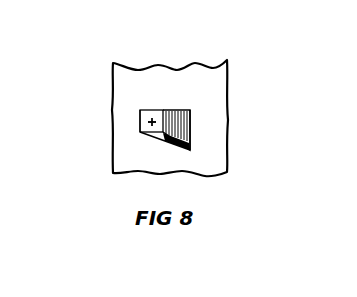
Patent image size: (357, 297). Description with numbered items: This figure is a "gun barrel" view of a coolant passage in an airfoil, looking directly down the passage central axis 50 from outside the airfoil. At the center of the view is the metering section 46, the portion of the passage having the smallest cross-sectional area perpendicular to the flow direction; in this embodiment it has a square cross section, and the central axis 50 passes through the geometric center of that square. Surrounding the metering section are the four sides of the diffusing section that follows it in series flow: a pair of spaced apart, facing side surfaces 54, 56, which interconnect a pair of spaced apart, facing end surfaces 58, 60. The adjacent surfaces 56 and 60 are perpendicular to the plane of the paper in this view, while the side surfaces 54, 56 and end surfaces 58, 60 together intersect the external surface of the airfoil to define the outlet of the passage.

The metering section 46 is at (154, 118).
The passage central axis 50 is at (141, 121).
The side surface 54 is at (190, 137).
The side surface 56 is at (143, 128).
The end surface 58 is at (168, 141).
The end surface 60 is at (189, 118).